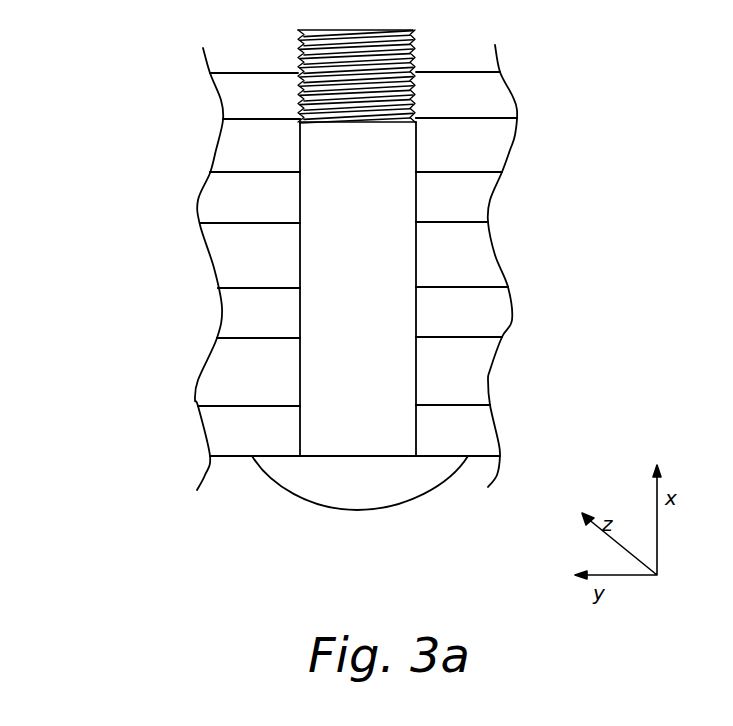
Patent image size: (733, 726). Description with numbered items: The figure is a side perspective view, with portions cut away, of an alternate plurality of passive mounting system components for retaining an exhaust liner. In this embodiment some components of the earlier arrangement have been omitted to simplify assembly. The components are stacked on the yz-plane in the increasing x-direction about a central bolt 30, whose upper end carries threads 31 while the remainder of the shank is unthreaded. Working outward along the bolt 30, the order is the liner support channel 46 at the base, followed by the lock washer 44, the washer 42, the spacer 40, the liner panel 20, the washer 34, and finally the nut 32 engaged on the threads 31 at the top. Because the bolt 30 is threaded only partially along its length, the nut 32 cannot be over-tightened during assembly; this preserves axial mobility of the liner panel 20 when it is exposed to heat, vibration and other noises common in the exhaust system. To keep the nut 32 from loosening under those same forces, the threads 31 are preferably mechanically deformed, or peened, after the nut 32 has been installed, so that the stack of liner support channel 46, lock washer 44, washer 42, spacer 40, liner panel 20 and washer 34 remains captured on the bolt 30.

The liner panel 20 is at (463, 203).
The bolt 30 is at (300, 250).
The threads 31 is at (413, 48).
The nut 32 is at (480, 97).
The washer 34 is at (475, 148).
The spacer 40 is at (467, 257).
The washer 42 is at (480, 313).
The lock washer 44 is at (470, 377).
The liner support channel 46 is at (473, 433).